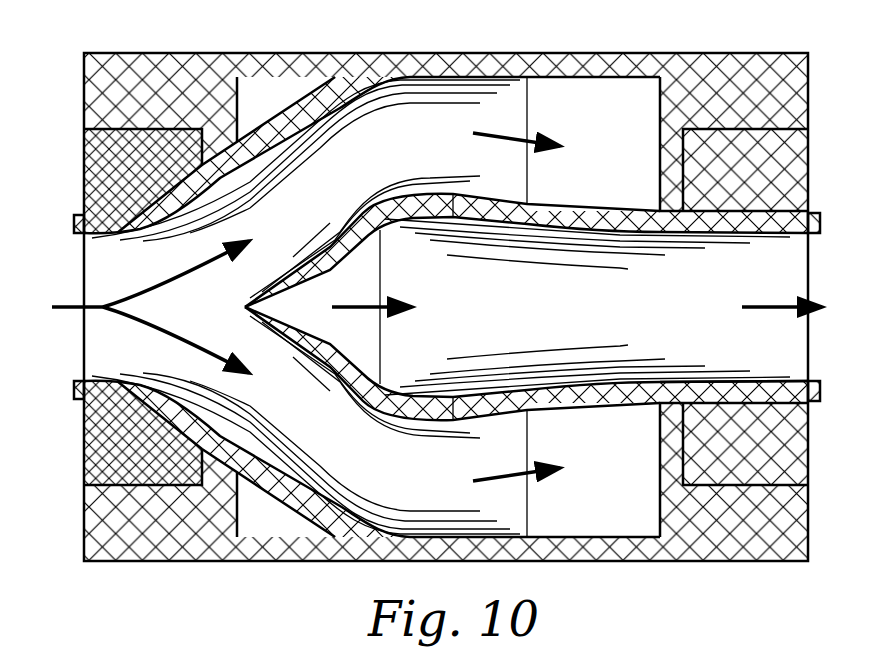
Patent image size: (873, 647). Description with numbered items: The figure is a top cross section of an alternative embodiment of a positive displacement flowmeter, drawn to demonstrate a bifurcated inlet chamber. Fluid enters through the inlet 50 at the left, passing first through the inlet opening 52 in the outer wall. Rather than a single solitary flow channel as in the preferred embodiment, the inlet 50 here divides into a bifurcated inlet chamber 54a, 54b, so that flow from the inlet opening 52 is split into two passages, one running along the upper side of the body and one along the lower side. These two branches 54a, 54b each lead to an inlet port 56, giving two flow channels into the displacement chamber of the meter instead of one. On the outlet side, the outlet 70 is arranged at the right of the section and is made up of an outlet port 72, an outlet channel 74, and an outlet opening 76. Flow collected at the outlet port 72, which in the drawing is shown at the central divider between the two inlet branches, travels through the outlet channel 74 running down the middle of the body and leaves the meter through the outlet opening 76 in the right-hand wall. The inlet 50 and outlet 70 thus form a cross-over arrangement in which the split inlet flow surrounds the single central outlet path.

The inlet 50 is at (69, 270).
The inlet opening 52 is at (96, 340).
The bifurcated inlet chamber 54a is at (270, 218).
The bifurcated inlet chamber 54b is at (273, 393).
The inlet port 56 is at (597, 130).
The outlet 70 is at (820, 266).
The outlet port 72 is at (358, 275).
The outlet channel 74 is at (659, 305).
The outlet opening 76 is at (780, 343).